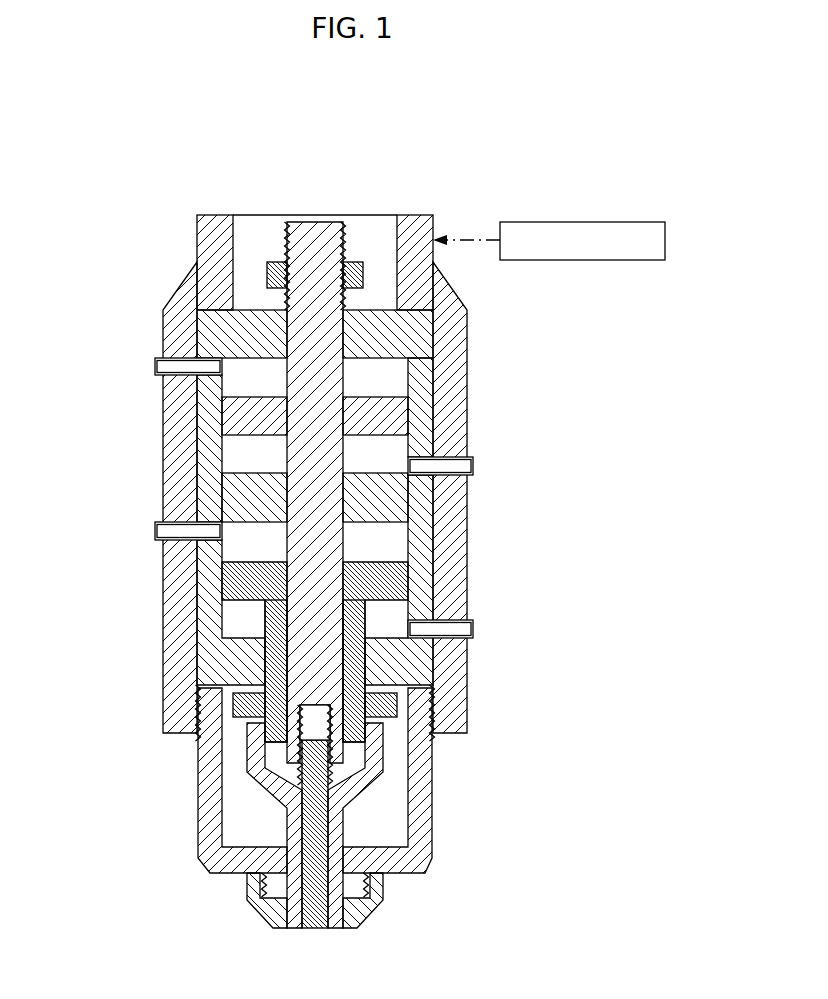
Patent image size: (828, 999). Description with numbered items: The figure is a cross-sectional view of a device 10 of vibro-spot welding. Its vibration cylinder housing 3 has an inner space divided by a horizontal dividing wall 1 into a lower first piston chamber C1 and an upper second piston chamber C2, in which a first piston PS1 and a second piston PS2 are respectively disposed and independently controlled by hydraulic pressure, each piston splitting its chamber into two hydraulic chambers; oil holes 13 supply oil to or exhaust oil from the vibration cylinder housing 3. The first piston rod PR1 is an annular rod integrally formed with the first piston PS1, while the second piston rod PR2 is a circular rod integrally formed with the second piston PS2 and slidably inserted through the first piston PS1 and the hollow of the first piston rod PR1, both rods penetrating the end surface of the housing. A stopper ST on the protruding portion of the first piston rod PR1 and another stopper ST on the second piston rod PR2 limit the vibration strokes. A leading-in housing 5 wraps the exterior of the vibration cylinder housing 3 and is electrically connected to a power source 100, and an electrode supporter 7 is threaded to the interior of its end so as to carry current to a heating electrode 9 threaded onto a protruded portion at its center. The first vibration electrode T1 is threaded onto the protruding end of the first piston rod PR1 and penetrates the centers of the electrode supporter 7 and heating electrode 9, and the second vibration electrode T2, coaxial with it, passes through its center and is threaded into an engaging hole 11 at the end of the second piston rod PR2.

The power source 100 is at (578, 222).
The device of vibro-spot welding 10 is at (360, 576).
The leading-in housing 5 is at (452, 338).
The vibration cylinder housing 3 is at (212, 455).
The dividing wall 1 is at (247, 497).
The electrode supporter 7 is at (425, 802).
The heating electrode 9 is at (262, 908).
The engaging hole 11 is at (330, 723).
The oil holes 13 is at (172, 368).
The stopper ST is at (348, 270).
The second piston PS2 is at (245, 418).
The first piston PS1 is at (243, 583).
The second piston rod PR2 is at (305, 545).
The first piston rod PR1 is at (273, 655).
The second piston chamber C2 is at (382, 457).
The first piston chamber C1 is at (382, 542).
The first vibration electrode T1 is at (337, 920).
The second vibration electrode T2 is at (313, 920).